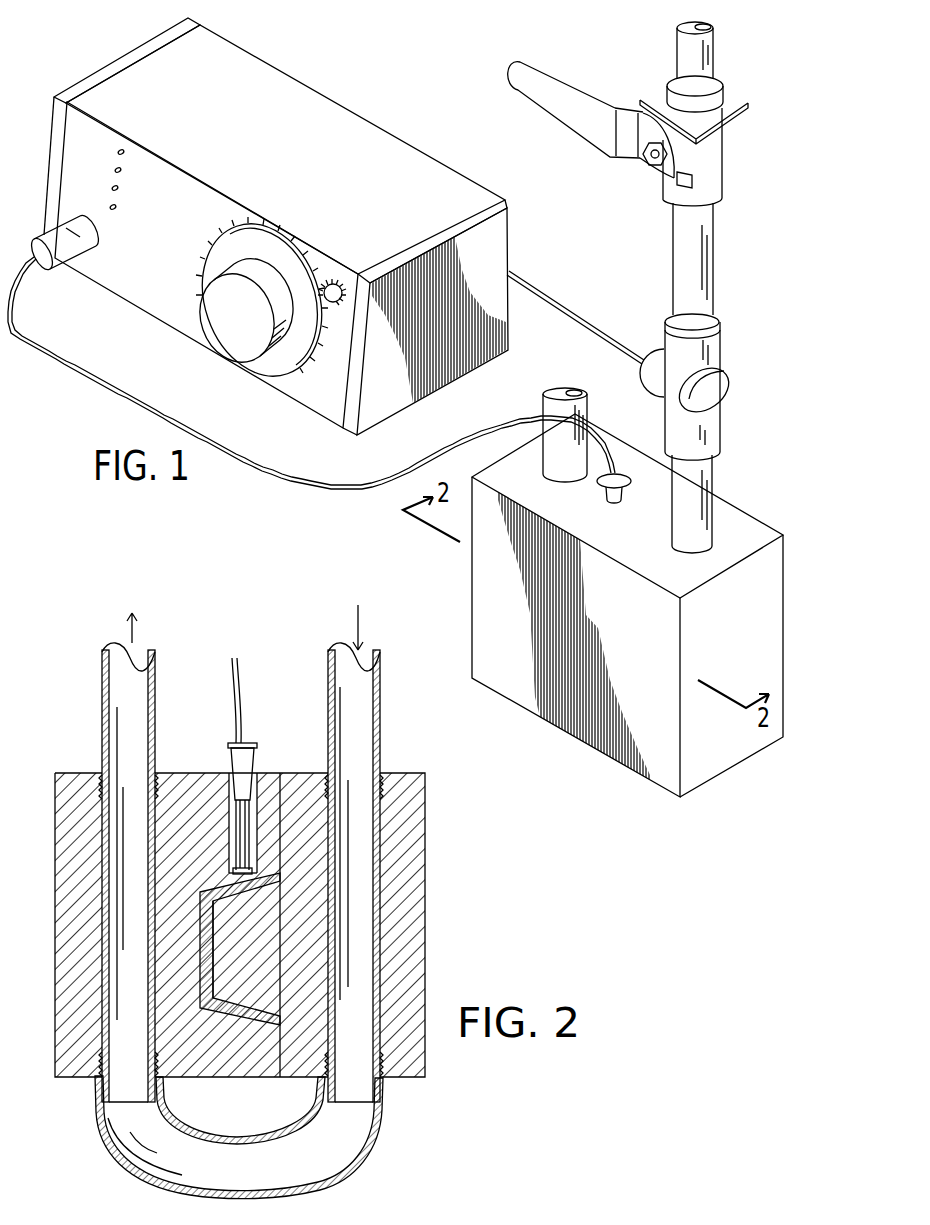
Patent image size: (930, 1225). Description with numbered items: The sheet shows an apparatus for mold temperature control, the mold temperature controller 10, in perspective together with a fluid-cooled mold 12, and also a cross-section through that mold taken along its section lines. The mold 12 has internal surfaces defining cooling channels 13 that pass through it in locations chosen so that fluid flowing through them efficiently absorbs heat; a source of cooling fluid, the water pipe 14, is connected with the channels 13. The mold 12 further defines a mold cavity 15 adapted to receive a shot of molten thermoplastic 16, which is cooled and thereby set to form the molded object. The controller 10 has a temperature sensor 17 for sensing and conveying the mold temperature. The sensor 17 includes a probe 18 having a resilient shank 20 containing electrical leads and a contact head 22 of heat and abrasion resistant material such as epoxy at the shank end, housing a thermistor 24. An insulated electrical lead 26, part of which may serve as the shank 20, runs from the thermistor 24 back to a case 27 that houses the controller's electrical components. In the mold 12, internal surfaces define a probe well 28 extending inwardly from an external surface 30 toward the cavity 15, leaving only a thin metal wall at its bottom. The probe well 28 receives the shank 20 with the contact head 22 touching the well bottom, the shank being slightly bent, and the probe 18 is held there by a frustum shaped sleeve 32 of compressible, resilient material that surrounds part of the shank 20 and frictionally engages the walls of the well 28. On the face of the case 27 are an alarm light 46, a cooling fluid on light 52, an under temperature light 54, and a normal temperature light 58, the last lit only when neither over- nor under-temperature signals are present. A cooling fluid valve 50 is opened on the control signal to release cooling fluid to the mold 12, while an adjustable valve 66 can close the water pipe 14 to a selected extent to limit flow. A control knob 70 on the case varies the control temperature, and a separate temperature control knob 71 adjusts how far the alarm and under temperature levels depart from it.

In FIG. 1, the mold temperature controller 10 is at (276, 226).
In FIG. 1, the mold 12 is at (734, 772).
In FIG. 2, the mold 12 is at (431, 878).
In FIG. 2, the cooling channels 13 is at (137, 938).
In FIG. 1, the water pipe 14 is at (714, 475).
In FIG. 2, the water pipe 14 is at (381, 712).
In FIG. 2, the mold cavity 15 is at (220, 950).
In FIG. 2, the molten thermoplastic 16 is at (203, 1003).
In FIG. 1, the temperature sensor 17 is at (108, 395).
In FIG. 1, the probe 18 is at (607, 494).
In FIG. 2, the probe 18 is at (232, 767).
In FIG. 2, the shank 20 is at (253, 847).
In FIG. 2, the contact head 22 is at (227, 857).
In FIG. 2, the thermistor 24 is at (290, 787).
In FIG. 1, the insulated electrical lead 26 is at (343, 487).
In FIG. 2, the insulated electrical lead 26 is at (243, 667).
In FIG. 1, the case 27 is at (400, 168).
In FIG. 2, the probe well 28 is at (230, 817).
In FIG. 1, the external surface 30 is at (510, 465).
In FIG. 2, the external surface 30 is at (78, 772).
In FIG. 2, the frustum shaped sleeve 32 is at (250, 787).
In FIG. 1, the alarm light 46 is at (125, 150).
In FIG. 1, the cooling fluid valve 50 is at (720, 423).
In FIG. 1, the cooling fluid on light 52 is at (119, 188).
In FIG. 1, the under temperature light 54 is at (117, 208).
In FIG. 1, the normal temperature light 58 is at (122, 170).
In FIG. 1, the adjustable valve 66 is at (723, 153).
In FIG. 1, the control knob 70 is at (252, 275).
In FIG. 1, the temperature control knob 71 is at (330, 302).